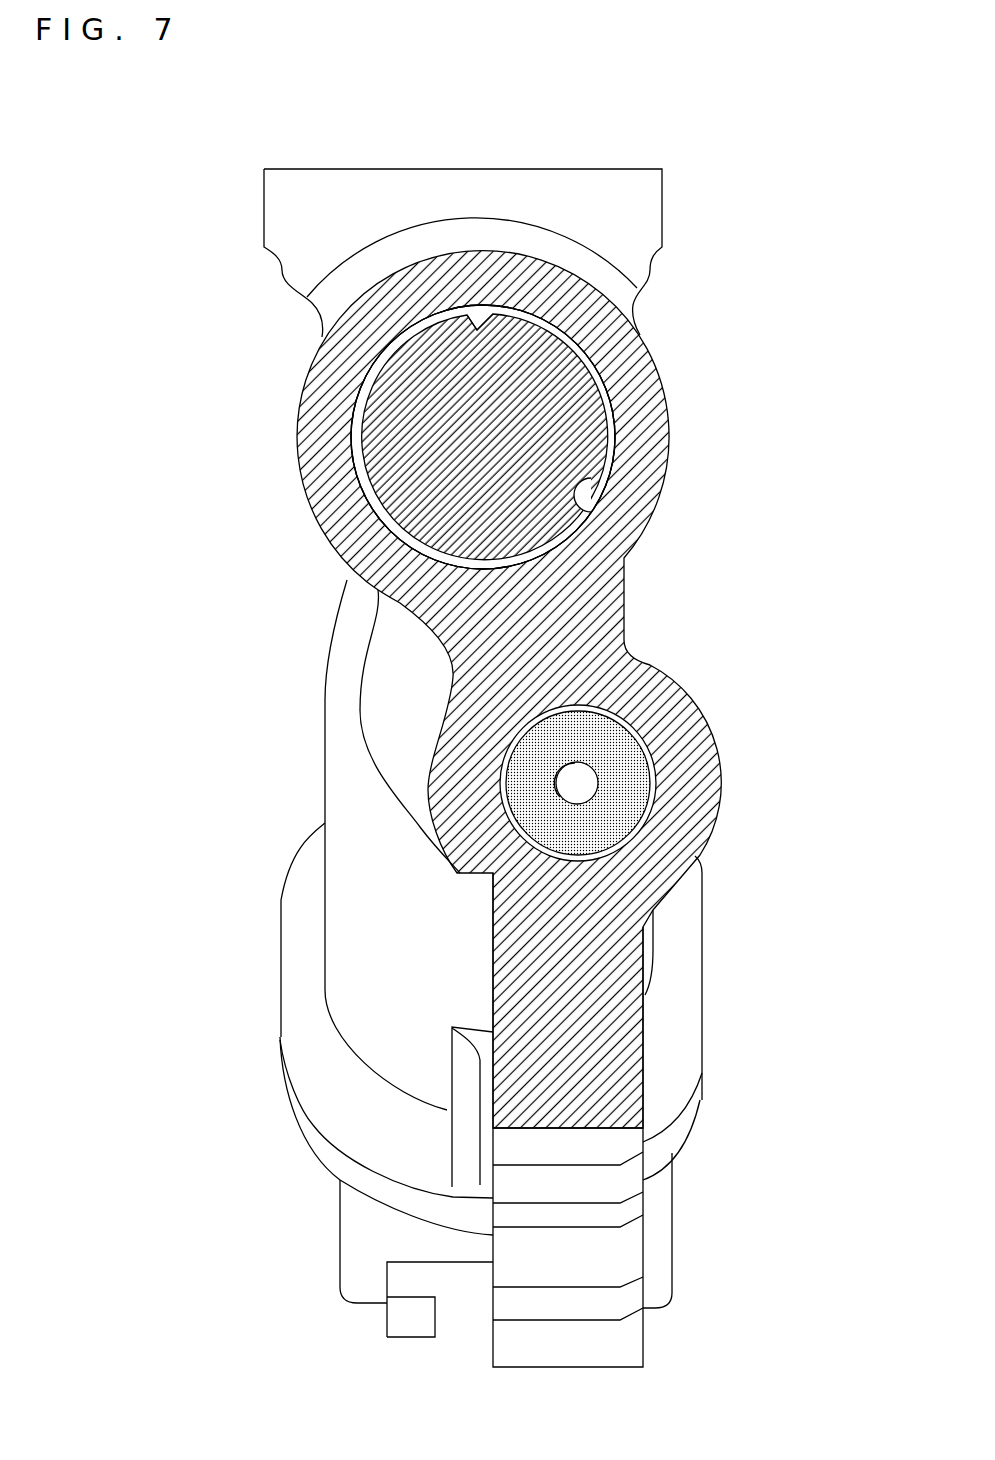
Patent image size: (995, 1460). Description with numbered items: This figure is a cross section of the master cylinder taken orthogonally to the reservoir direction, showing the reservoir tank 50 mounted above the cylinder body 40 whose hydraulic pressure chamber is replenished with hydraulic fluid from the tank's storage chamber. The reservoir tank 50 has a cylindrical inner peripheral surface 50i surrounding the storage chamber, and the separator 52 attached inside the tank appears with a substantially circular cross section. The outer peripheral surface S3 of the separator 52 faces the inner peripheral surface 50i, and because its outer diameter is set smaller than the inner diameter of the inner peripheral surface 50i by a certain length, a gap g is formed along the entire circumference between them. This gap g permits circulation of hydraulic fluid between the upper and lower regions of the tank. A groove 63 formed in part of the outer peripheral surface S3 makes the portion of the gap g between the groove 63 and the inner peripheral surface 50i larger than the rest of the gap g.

The cylinder body 40 is at (348, 850).
The reservoir tank 50 is at (308, 390).
The inner peripheral surface 50i is at (582, 522).
The separator 52 is at (413, 540).
The groove 63 is at (487, 305).
The gap g is at (350, 462).
The outer peripheral surface S3 is at (595, 378).